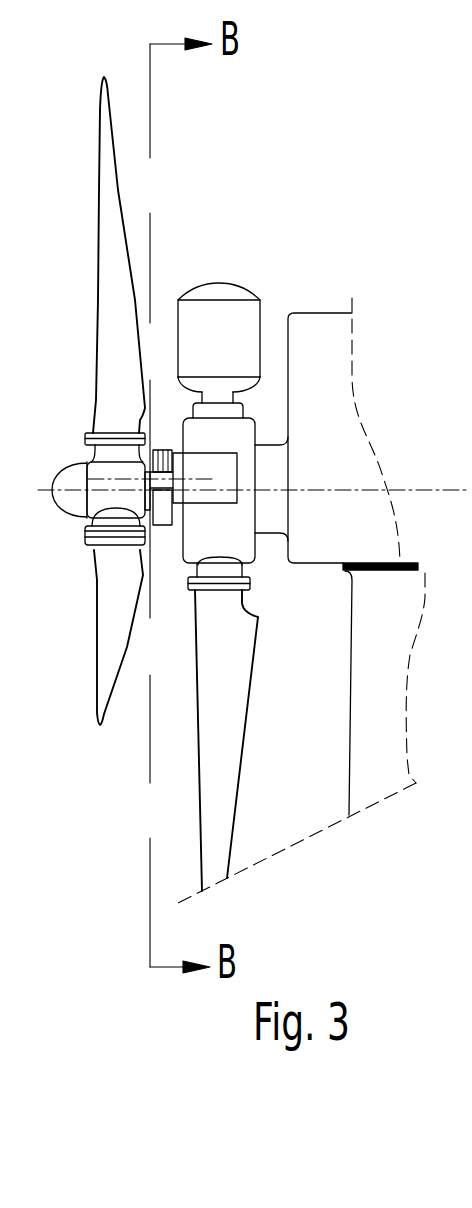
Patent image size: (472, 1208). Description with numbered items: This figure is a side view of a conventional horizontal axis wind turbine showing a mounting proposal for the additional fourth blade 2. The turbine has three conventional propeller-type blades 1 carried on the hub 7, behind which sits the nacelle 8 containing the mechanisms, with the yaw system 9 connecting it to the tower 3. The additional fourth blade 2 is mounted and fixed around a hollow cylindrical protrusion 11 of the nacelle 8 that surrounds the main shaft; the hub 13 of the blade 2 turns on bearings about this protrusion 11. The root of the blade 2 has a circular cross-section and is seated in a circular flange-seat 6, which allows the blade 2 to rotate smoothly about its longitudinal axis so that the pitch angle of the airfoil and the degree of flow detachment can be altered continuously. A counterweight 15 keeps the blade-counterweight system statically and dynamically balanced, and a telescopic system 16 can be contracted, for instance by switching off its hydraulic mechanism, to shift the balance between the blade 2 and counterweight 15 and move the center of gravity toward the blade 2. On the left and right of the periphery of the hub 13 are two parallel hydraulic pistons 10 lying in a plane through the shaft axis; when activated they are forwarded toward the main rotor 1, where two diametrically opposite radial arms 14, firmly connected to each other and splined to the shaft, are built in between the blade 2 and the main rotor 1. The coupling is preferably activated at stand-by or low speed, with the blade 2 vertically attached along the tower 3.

The conventional blade 1 is at (99, 140).
The additional fourth blade 2 is at (200, 762).
The tower 3 is at (352, 695).
The circular flange-seat 6 is at (249, 583).
The hub 7 is at (65, 462).
The nacelle 8 is at (352, 313).
The yaw system 9 is at (397, 563).
The hydraulic piston 10 is at (88, 477).
The hollow cylindrical protrusion 11 is at (265, 445).
The hub of the additional fourth blade 13 is at (181, 431).
The radial arm 14 is at (148, 518).
The counterweight 15 is at (207, 284).
The telescopic system 16 is at (205, 397).